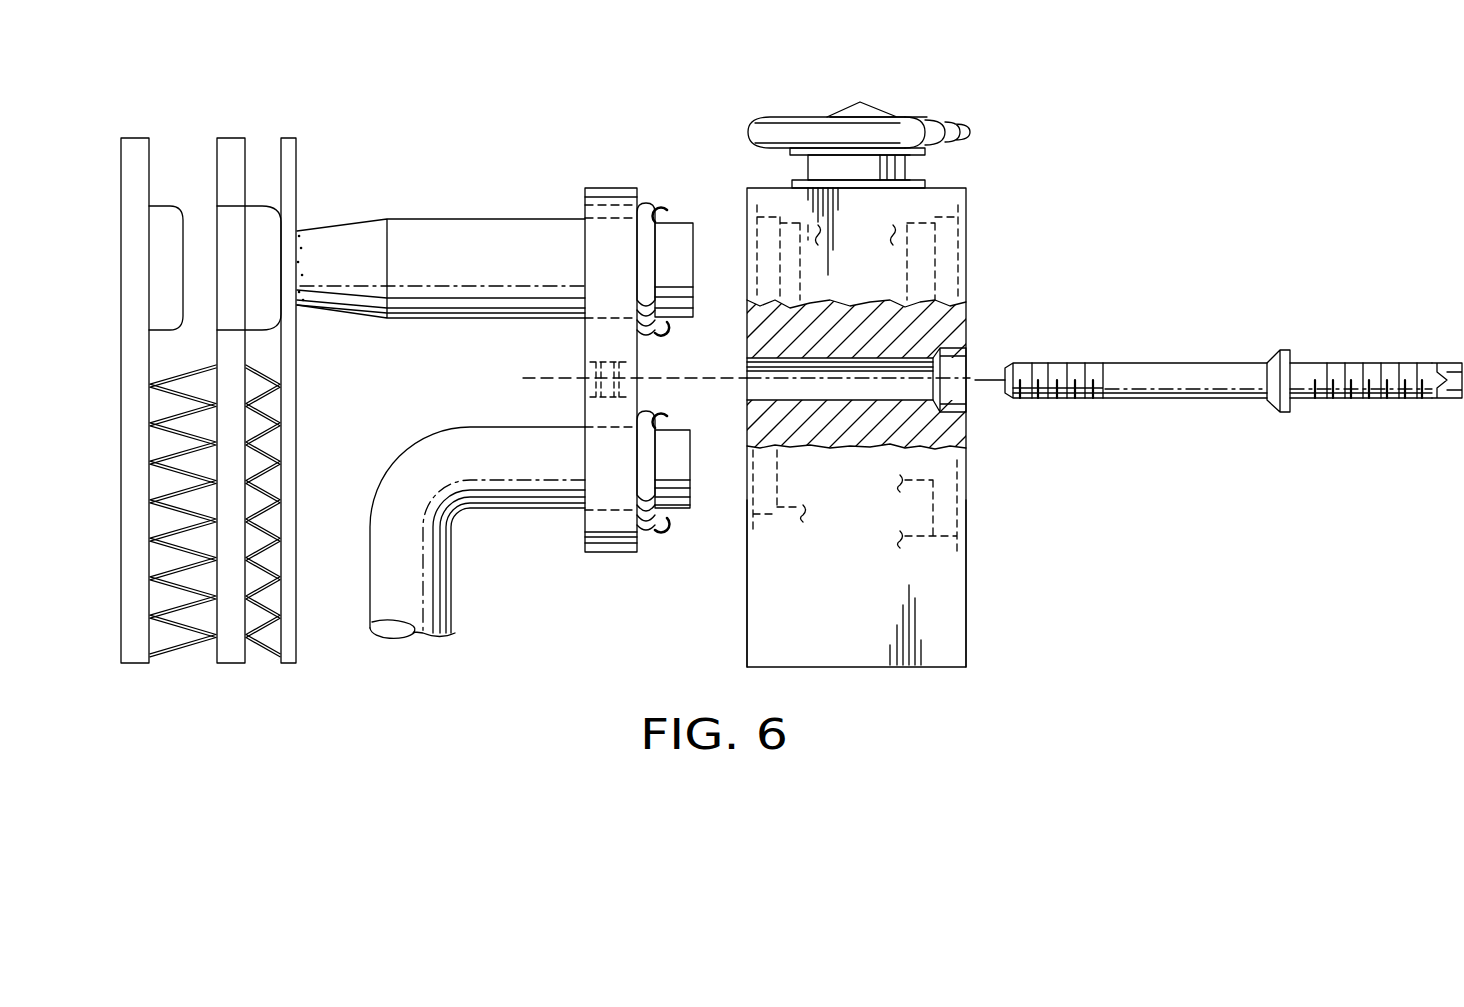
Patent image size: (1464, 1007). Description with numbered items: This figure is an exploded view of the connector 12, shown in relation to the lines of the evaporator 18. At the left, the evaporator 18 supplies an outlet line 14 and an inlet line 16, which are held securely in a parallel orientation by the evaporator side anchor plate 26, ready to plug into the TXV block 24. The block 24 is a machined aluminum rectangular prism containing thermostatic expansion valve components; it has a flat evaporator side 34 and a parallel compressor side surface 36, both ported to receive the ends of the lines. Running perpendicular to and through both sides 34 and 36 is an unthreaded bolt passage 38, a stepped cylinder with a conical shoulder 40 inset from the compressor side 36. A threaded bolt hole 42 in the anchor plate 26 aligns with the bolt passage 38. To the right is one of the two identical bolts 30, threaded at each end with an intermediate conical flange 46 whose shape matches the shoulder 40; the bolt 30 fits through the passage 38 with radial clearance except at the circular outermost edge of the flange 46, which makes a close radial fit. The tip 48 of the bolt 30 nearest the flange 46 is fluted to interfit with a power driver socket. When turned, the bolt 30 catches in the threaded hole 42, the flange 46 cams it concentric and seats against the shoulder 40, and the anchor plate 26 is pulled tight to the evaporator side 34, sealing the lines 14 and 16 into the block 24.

The connector 12 is at (1010, 164).
The evaporator outlet line 14 is at (460, 222).
The evaporator inlet line 16 is at (485, 433).
The evaporator 18 is at (136, 150).
The TXV block 24 is at (970, 192).
The evaporator side anchor plate 26 is at (597, 183).
The bolt 30 is at (1374, 356).
The evaporator side 34 is at (747, 618).
The compressor side surface 36 is at (966, 615).
The bolt passage 38 is at (823, 402).
The conical shoulder 40 is at (934, 395).
The threaded bolt hole 42 is at (585, 372).
The conical flange 46 is at (1286, 382).
The tip 48 is at (1455, 398).